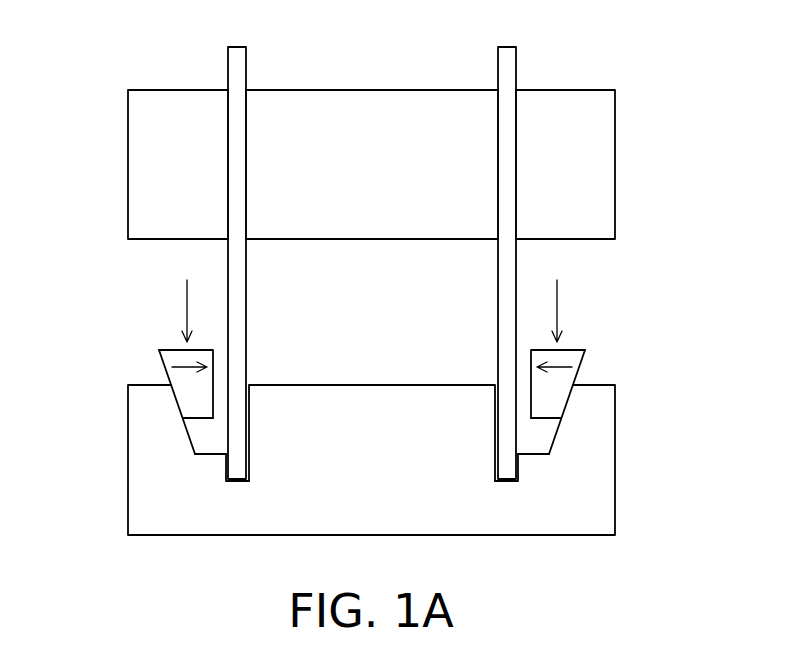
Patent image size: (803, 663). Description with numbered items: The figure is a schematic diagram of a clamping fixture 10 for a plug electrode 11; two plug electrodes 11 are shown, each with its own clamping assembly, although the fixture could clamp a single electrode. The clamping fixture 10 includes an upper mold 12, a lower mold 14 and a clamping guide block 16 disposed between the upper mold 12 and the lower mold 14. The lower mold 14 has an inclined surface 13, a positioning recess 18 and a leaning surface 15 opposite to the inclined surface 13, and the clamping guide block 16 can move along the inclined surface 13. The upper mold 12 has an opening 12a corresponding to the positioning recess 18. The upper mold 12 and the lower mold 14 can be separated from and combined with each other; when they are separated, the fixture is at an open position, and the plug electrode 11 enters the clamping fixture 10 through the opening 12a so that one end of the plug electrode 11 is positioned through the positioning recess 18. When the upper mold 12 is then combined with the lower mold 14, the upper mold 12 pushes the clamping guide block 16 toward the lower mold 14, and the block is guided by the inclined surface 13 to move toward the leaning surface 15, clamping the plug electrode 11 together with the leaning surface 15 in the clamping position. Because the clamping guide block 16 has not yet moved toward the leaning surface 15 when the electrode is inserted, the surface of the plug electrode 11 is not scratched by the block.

The clamping fixture 10 is at (106, 20).
The plug electrode 11 is at (240, 64).
The upper mold 12 is at (616, 164).
The opening 12a is at (217, 133).
The inclined surface 13 is at (172, 425).
The lower mold 14 is at (616, 460).
The leaning surface 15 is at (258, 436).
The clamping guide block 16 is at (168, 349).
The positioning recess 18 is at (208, 470).